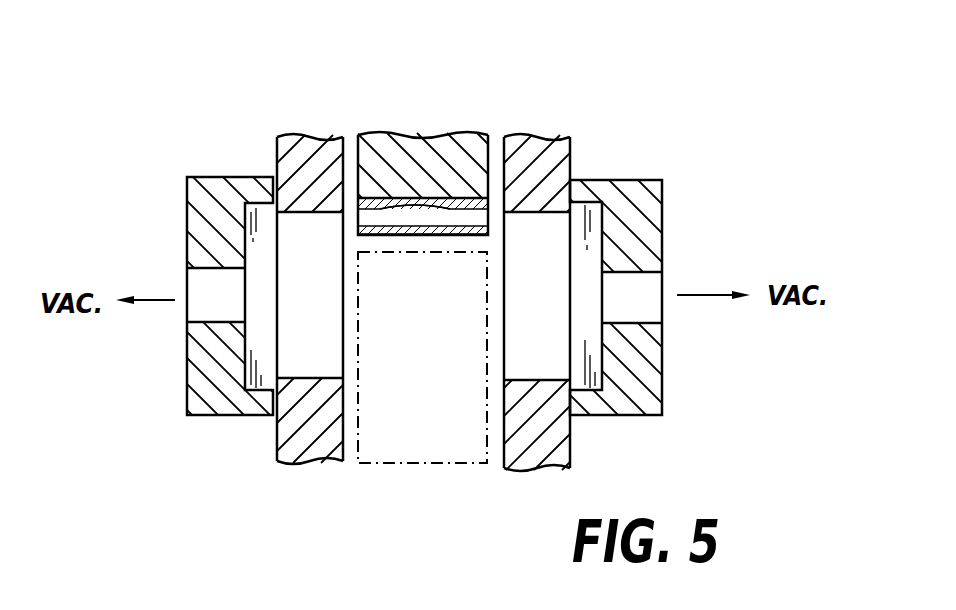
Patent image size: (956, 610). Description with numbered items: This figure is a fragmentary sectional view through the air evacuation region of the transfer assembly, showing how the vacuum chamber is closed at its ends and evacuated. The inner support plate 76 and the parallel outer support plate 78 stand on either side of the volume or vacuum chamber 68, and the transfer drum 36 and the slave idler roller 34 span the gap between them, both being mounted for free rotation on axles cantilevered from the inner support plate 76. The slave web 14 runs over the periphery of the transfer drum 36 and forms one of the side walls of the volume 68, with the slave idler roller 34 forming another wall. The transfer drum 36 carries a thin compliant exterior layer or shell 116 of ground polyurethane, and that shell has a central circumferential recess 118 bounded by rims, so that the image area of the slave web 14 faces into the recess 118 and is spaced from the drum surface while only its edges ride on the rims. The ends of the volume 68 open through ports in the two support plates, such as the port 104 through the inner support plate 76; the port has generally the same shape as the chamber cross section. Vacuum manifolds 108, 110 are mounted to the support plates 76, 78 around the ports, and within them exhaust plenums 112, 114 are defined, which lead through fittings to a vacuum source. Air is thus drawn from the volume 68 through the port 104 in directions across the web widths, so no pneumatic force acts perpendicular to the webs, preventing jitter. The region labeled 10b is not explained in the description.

The outer support plate 78 is at (290, 136).
The inner support plate 76 is at (557, 136).
The transfer drum 36 is at (428, 134).
The exterior layer or shell 116 is at (478, 198).
The central circumferential concavity or recess 118 is at (414, 198).
The slave web 14 is at (410, 238).
The volume or vacuum chamber 68 is at (445, 250).
The slave idler roller 34 is at (383, 463).
The vacuum manifold 110 is at (213, 178).
The exhaust plenum 114 is at (258, 252).
The window / opening 10b is at (310, 268).
The vacuum manifold 108 is at (606, 180).
The exhaust plenum 112 is at (594, 250).
The port 104 is at (545, 284).